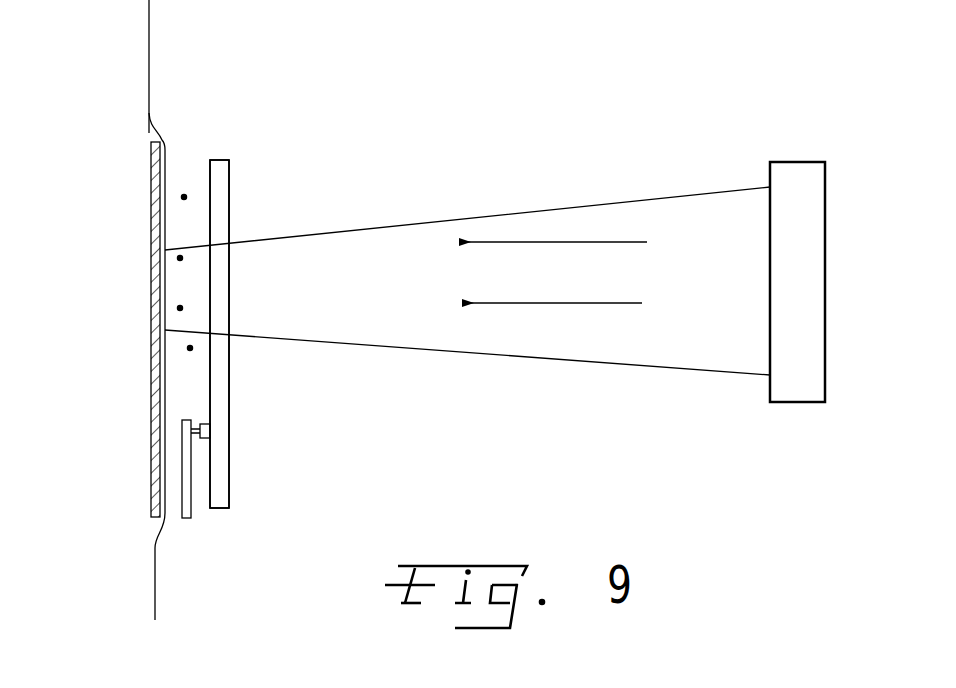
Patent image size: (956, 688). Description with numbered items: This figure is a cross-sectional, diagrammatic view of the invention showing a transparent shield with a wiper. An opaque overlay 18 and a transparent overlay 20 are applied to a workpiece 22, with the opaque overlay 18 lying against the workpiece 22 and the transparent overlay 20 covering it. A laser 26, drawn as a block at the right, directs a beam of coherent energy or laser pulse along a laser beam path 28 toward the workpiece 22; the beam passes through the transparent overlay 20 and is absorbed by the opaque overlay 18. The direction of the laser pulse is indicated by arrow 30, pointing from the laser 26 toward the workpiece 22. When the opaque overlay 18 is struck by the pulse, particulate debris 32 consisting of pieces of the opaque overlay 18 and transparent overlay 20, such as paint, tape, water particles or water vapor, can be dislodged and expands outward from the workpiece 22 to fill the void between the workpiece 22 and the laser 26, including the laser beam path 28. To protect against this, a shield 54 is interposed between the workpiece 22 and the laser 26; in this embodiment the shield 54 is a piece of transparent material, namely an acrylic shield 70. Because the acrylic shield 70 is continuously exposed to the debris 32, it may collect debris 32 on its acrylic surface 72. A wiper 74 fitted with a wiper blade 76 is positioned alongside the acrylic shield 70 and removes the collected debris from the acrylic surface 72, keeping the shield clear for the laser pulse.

The opaque overlay 18 is at (151, 271).
The transparent overlay 20 is at (151, 130).
The workpiece 22 is at (149, 21).
The laser 26 is at (810, 398).
The laser beam path 28 is at (651, 357).
The arrow 30 is at (535, 242).
The debris 32 is at (184, 194).
The shield 54 is at (242, 165).
The acrylic shield 70 is at (224, 508).
The acrylic surface 72 is at (212, 186).
The wiper 74 is at (204, 514).
The wiper blade 76 is at (187, 518).